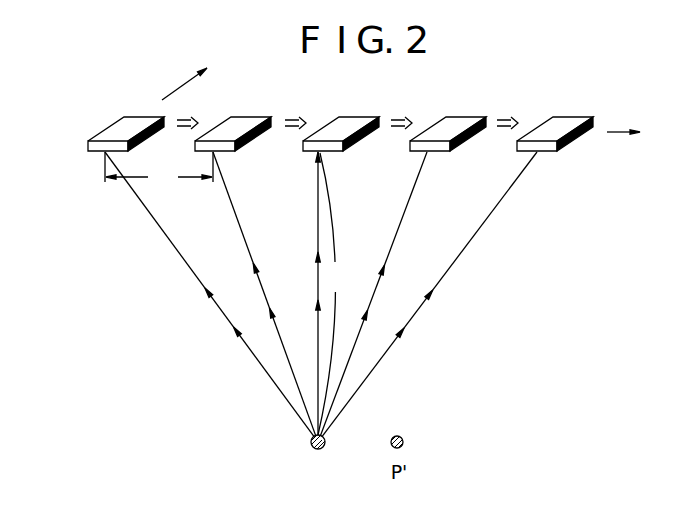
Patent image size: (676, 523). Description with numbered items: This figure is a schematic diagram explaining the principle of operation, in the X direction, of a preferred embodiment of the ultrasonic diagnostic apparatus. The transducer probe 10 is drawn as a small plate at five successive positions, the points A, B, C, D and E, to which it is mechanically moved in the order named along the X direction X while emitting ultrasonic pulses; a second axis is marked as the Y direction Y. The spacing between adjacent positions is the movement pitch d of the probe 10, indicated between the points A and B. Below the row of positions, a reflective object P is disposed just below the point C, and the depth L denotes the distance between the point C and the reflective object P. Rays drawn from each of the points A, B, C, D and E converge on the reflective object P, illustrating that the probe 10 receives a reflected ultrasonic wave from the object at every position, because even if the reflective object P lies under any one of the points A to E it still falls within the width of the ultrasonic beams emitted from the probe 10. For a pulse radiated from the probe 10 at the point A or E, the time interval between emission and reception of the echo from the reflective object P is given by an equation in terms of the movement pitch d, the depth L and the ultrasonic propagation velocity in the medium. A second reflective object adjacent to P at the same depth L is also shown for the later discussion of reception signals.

The transducer probe 10 is at (139, 122).
The point A is at (126, 106).
The point B is at (233, 116).
The point C is at (341, 116).
The point D is at (448, 116).
The point E is at (555, 116).
The reflective object P is at (321, 317).
The depth L is at (332, 294).
The movement pitch d is at (159, 171).
The X direction X is at (640, 132).
The Y direction Y is at (193, 73).